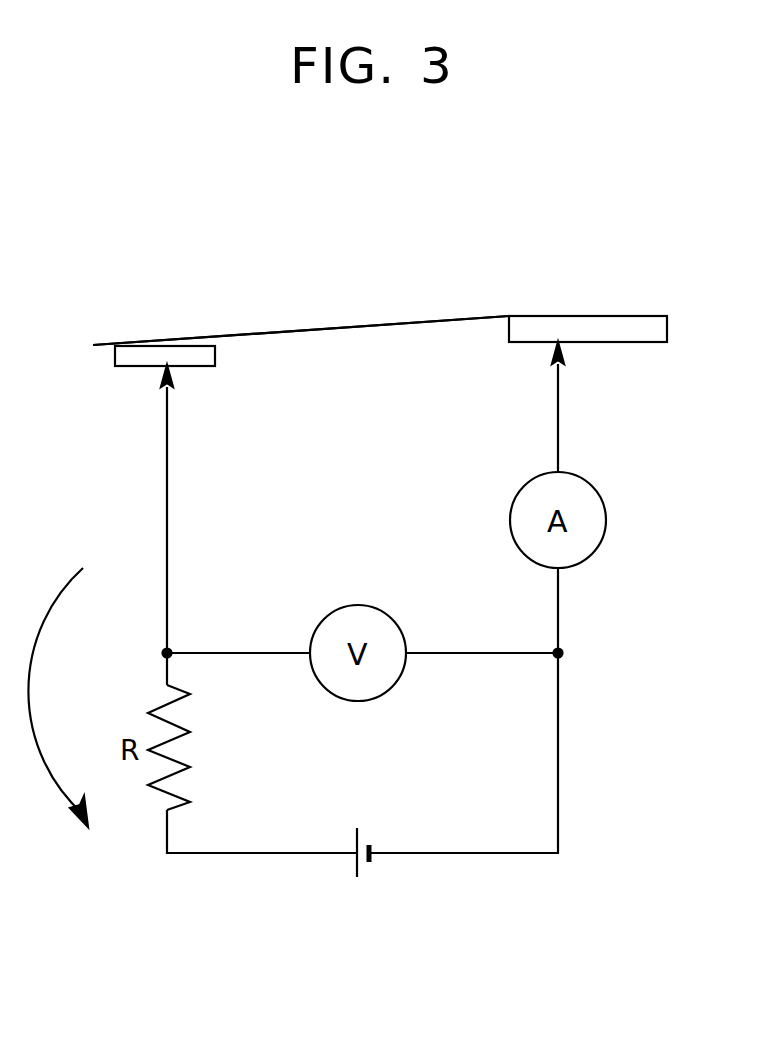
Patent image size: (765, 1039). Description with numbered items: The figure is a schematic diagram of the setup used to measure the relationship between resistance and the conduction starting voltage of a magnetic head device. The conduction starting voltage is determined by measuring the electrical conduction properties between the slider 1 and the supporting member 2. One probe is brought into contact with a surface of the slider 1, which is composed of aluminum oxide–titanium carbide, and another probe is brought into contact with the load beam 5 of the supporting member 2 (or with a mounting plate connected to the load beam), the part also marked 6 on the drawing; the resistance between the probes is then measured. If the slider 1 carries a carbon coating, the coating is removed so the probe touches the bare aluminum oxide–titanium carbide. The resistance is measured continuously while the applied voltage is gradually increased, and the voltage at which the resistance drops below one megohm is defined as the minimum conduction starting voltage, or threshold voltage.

The slider 1 is at (150, 353).
The supporting member 2 is at (620, 322).
The conductive layer 6 is at (372, 325).
The load beam 5 is at (301, 284).